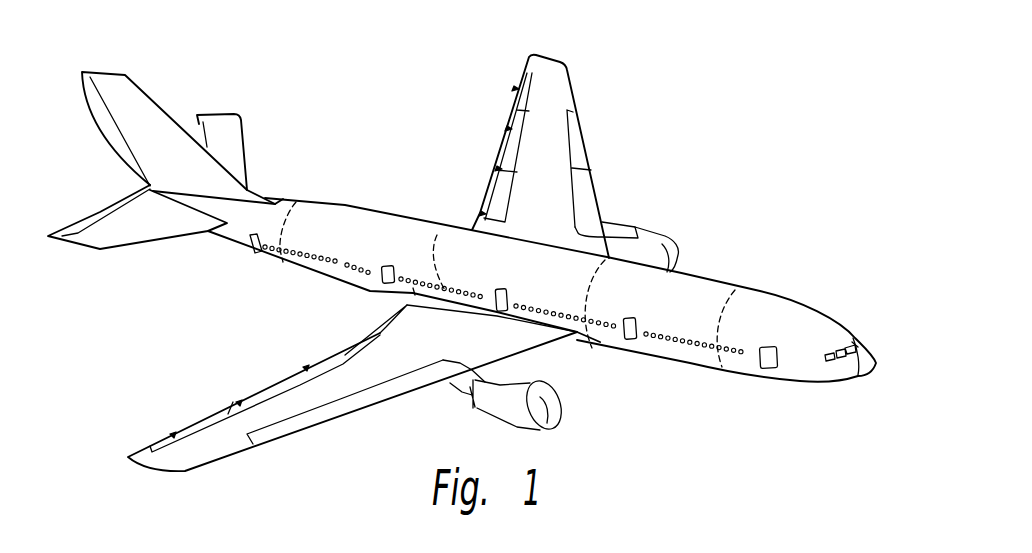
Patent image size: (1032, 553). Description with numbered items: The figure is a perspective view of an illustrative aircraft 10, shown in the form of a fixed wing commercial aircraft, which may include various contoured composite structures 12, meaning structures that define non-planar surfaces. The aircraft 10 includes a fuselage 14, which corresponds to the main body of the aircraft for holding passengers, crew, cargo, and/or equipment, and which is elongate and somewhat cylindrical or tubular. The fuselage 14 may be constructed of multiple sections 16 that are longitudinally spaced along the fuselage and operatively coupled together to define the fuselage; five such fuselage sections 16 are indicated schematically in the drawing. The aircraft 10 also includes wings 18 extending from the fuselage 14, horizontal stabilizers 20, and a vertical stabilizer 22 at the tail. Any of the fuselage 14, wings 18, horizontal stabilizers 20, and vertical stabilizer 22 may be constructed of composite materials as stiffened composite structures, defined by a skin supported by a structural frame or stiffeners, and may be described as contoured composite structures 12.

The aircraft 10 is at (798, 42).
The contoured composite structures 12 is at (446, 52).
The fuselage 14 is at (392, 210).
The fuselage sections 16 is at (277, 200).
The wings 18 is at (582, 88).
The horizontal stabilizers 20 is at (248, 126).
The vertical stabilizer 22 is at (159, 97).